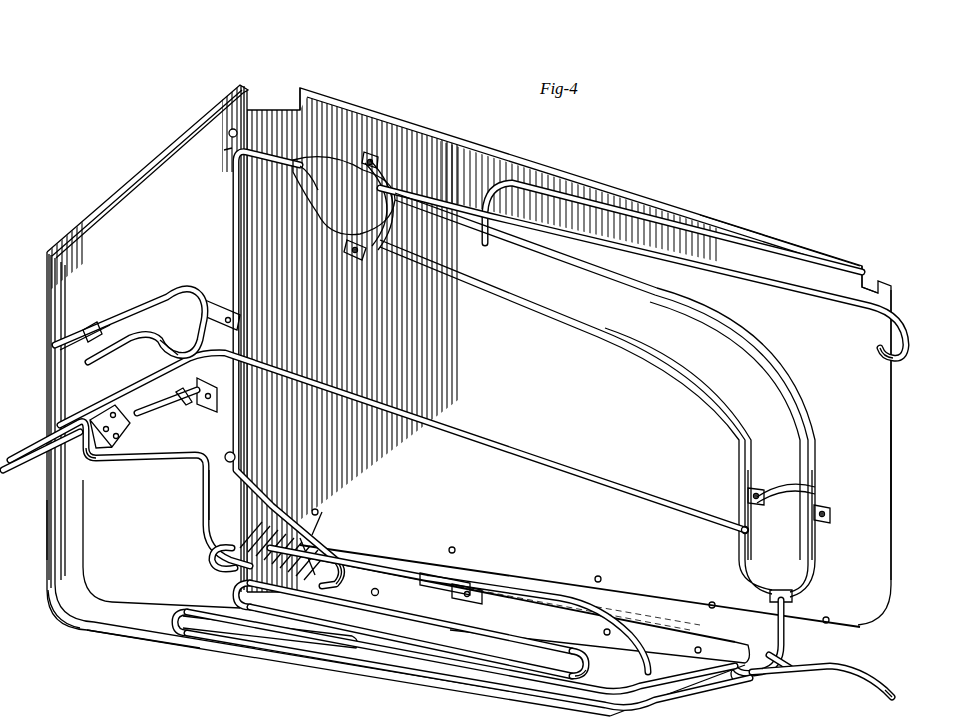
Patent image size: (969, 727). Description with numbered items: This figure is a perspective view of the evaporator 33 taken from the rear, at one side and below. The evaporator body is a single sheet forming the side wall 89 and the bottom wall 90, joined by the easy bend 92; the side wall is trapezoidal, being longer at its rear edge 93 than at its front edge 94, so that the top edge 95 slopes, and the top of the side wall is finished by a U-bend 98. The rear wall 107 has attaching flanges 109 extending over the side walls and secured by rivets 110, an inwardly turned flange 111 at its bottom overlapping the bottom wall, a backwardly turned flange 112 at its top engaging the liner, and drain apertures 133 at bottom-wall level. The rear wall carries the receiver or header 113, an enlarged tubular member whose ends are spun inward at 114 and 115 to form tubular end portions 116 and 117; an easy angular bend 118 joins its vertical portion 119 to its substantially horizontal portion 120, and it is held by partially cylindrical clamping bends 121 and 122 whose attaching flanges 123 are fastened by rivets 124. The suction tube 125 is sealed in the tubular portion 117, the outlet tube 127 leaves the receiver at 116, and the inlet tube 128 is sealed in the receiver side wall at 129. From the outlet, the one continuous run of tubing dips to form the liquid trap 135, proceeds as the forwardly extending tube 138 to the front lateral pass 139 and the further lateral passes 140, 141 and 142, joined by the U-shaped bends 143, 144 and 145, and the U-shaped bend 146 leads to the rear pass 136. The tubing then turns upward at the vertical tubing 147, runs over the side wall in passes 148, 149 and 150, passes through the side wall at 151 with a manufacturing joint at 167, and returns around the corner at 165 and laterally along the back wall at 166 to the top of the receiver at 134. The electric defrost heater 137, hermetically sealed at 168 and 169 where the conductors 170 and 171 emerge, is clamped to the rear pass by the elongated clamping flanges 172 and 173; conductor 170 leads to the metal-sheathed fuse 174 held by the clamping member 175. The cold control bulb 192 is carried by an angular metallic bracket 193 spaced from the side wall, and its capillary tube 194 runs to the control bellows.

The evaporator 33 is at (885, 448).
The side wall 89 is at (75, 293).
The bottom wall 90 is at (100, 625).
The easy bend 92 is at (62, 608).
The rear edge 93 is at (249, 108).
The front edge 94 is at (48, 526).
The top edge 95 is at (120, 195).
The U-bend 98 is at (182, 135).
The rear wall 107 is at (884, 487).
The attaching flanges 109 is at (226, 158).
The rivets 110 is at (228, 140).
The inwardly turned flange 111 is at (650, 602).
The backwardly turned flange 112 is at (785, 242).
The receiver or header 113 is at (803, 397).
The spun-in end 114 is at (805, 578).
The spun-in end 115 is at (312, 150).
The tubular end portion 116 is at (800, 593).
The tubular end portion 117 is at (306, 181).
The easy angular bend 118 is at (770, 353).
The vertical portion 119 is at (815, 482).
The horizontal portion 120 is at (500, 280).
The clamping bend 121 is at (392, 205).
The clamping bend 122 is at (820, 495).
The attaching flanges 123 is at (352, 240).
The rivets 124 is at (382, 245).
The suction tube 125 is at (232, 188).
The outlet tube 127 is at (790, 612).
The inlet tube 128 is at (540, 450).
The inlet sealing point 129 is at (745, 532).
The drain apertures 133 is at (315, 510).
The tubing connection point 134 is at (483, 220).
The liquid trap 135 is at (745, 678).
The rear pass 136 is at (322, 512).
The electric heater 137 is at (300, 538).
The forwardly extending tube 138 is at (684, 672).
The front lateral pass 139 is at (423, 672).
The lateral pass 140 is at (430, 630).
The lateral pass 141 is at (520, 645).
The lateral pass 142 is at (343, 540).
The U-shaped bend 143 is at (175, 628).
The U-shaped bend 144 is at (236, 594).
The U-shaped bend 145 is at (586, 672).
The U-shaped bend 146 is at (588, 658).
The vertical tubing 147 is at (204, 502).
The pass 148 is at (102, 468).
The pass 149 is at (168, 325).
The pass 150 is at (172, 290).
The wall passage 151 is at (88, 330).
The corner tubing 165 is at (908, 345).
The lateral back-wall tubing 166 is at (800, 280).
The joint 167 is at (120, 323).
The hermetic seal 168 is at (212, 553).
The hermetic seal 169 is at (826, 675).
The electric conductor 170 is at (296, 510).
The electric conductor 171 is at (886, 680).
The clamping flange 172 is at (340, 576).
The clamping flange 173 is at (340, 588).
The electric fuse 174 is at (455, 570).
The clamping member 175 is at (480, 606).
The cold control bulb 192 is at (118, 392).
The angular metallic bracket 193 is at (128, 432).
The capillary tube 194 is at (40, 440).